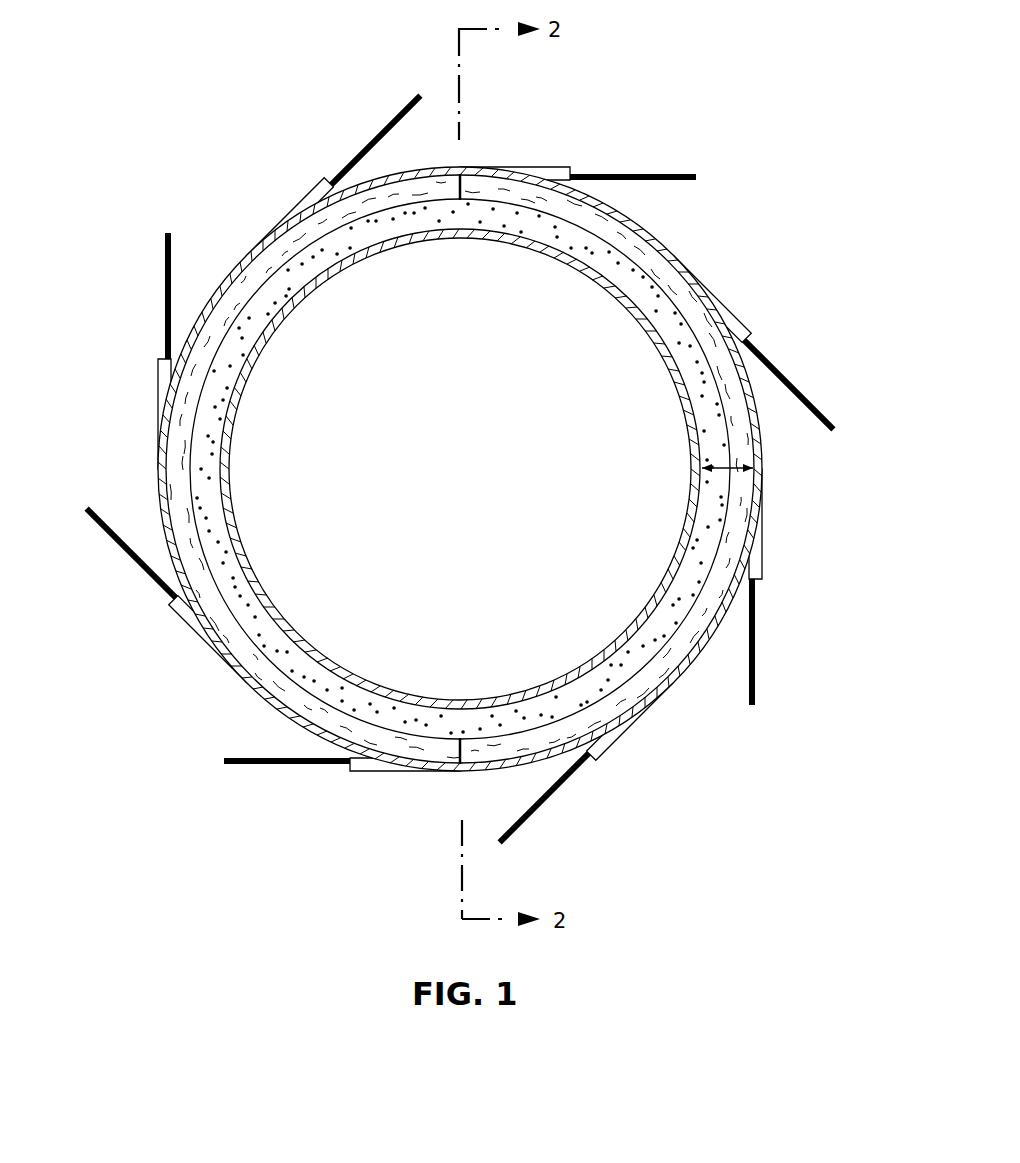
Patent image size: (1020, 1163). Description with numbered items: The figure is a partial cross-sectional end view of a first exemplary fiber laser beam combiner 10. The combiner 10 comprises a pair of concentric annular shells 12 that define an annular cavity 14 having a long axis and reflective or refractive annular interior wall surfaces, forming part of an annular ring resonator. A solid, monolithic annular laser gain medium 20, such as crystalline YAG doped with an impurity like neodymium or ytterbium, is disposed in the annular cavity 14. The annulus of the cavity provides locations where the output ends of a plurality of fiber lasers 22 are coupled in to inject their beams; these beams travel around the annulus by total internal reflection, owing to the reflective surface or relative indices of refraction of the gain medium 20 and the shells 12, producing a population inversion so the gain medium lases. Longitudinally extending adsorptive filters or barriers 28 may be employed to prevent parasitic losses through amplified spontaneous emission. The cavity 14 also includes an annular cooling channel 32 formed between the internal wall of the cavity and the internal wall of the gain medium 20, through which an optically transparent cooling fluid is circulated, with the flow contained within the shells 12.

The fiber laser beam combiner 10 is at (644, 83).
The concentric annular shells 12 is at (653, 240).
The annular cavity 14 is at (700, 466).
The annular laser gain medium 20 is at (267, 262).
The fiber lasers 22 is at (655, 176).
The filters or barriers 28 is at (466, 190).
The annular cooling channel 32 is at (252, 608).